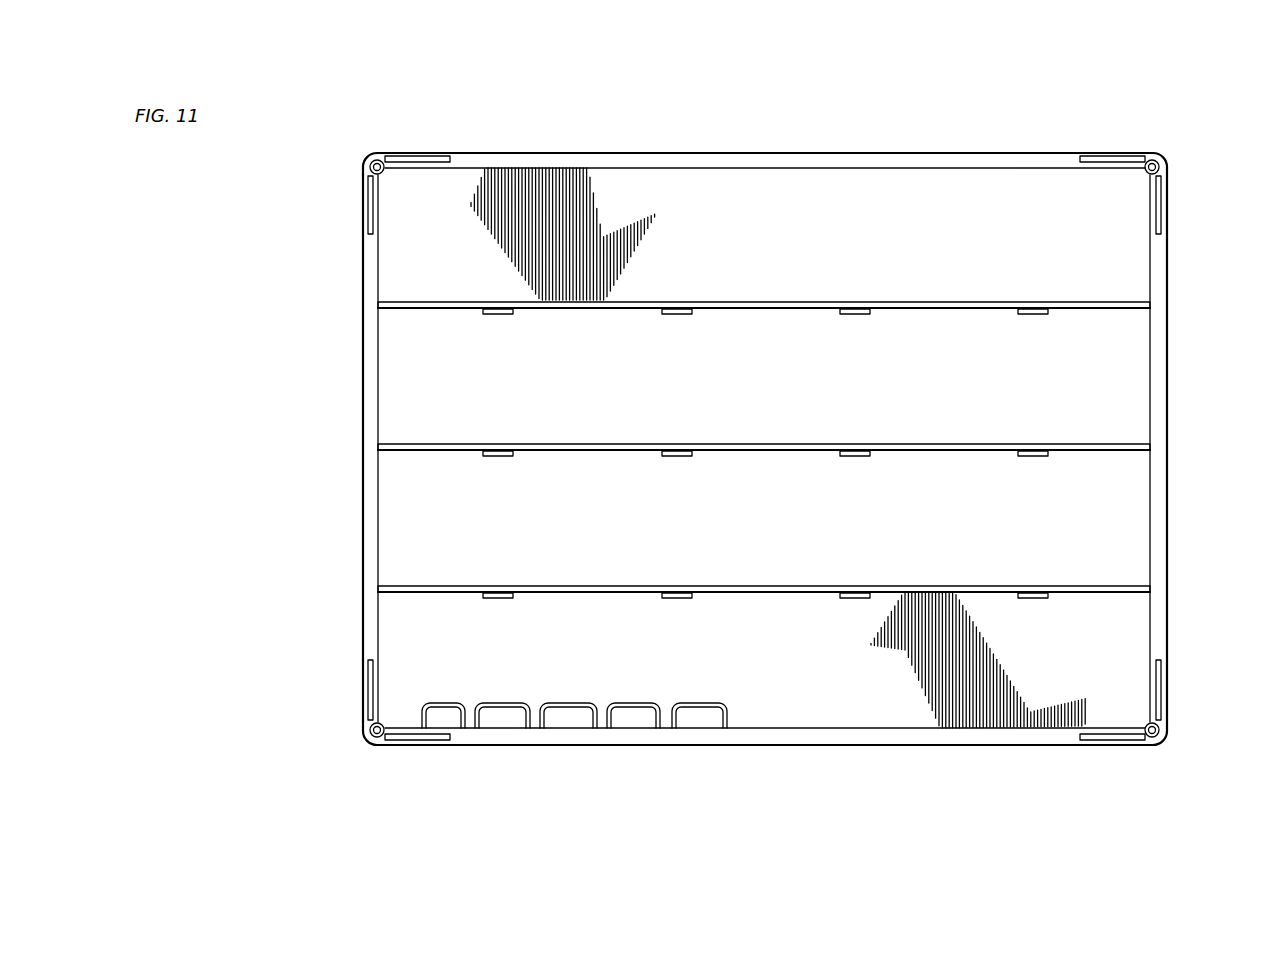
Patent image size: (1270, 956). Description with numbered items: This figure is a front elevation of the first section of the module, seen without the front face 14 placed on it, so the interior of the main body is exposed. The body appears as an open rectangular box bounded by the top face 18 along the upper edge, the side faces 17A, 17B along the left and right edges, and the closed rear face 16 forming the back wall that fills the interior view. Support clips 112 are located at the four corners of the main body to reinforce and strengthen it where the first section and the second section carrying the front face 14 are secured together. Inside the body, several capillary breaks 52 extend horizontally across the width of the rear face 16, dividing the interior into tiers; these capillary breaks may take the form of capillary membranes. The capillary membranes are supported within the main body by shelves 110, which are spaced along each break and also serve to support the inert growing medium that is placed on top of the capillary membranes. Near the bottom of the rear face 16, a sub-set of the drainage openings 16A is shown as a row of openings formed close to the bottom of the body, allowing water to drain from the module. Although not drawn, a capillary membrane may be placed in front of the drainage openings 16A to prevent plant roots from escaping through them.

The front face 14 is at (1013, 748).
The top face 18 is at (1019, 153).
The side face 17A is at (363, 480).
The side face 17B is at (1167, 410).
The support clip 112 is at (377, 158).
The capillary break 52 is at (406, 300).
The shelf 110 is at (498, 314).
The rear face 16 is at (875, 239).
The drainage opening 16A is at (443, 720).